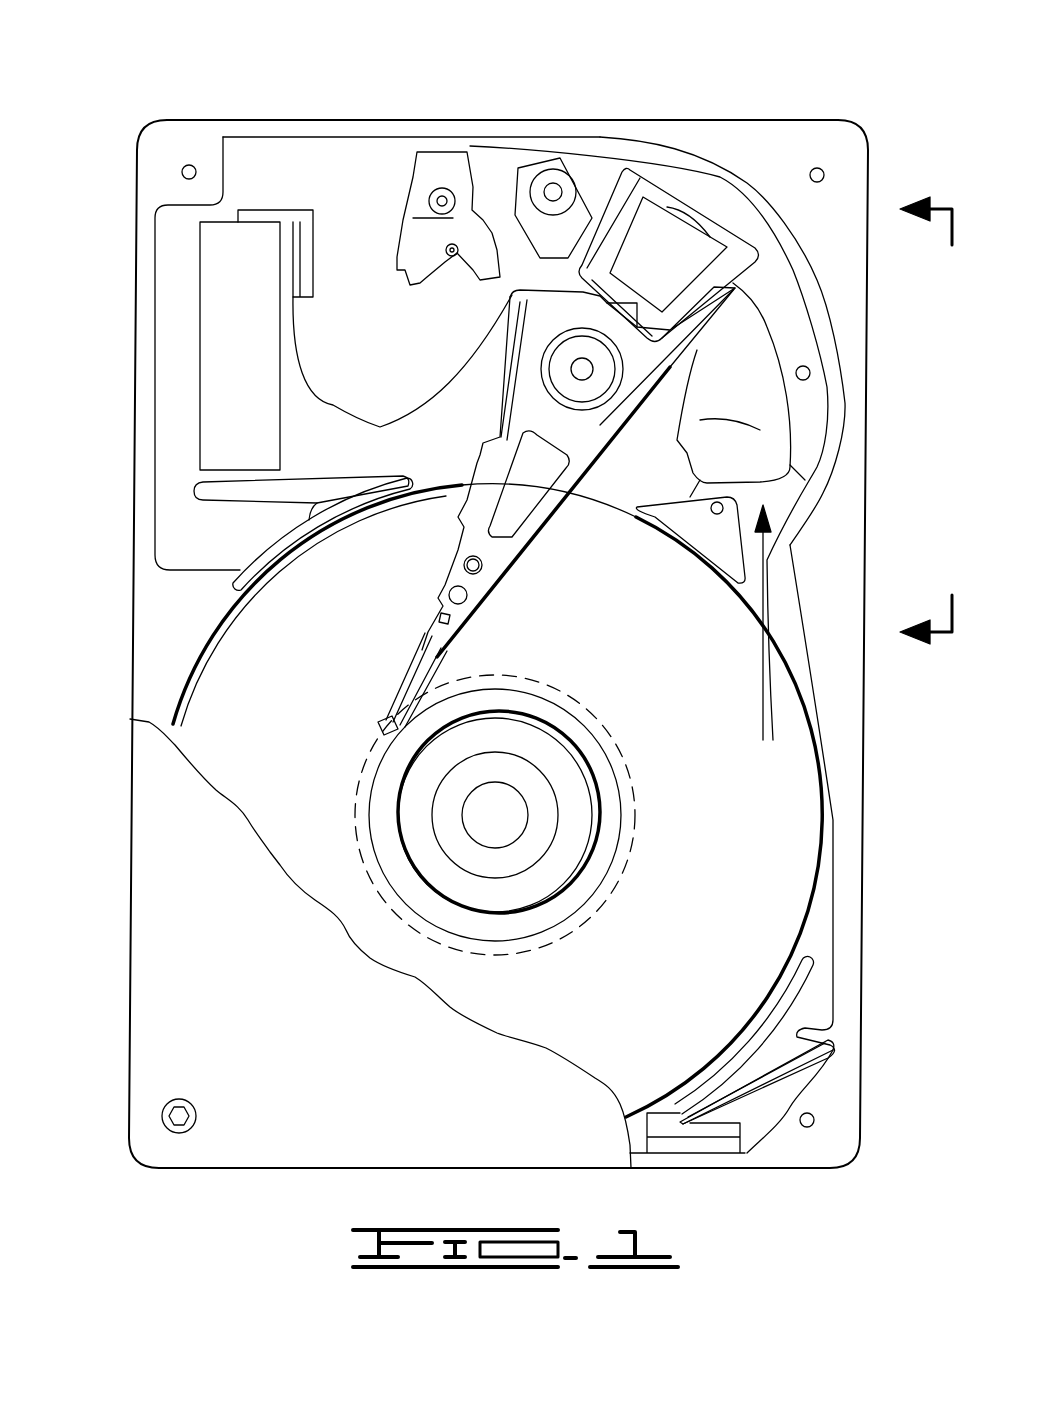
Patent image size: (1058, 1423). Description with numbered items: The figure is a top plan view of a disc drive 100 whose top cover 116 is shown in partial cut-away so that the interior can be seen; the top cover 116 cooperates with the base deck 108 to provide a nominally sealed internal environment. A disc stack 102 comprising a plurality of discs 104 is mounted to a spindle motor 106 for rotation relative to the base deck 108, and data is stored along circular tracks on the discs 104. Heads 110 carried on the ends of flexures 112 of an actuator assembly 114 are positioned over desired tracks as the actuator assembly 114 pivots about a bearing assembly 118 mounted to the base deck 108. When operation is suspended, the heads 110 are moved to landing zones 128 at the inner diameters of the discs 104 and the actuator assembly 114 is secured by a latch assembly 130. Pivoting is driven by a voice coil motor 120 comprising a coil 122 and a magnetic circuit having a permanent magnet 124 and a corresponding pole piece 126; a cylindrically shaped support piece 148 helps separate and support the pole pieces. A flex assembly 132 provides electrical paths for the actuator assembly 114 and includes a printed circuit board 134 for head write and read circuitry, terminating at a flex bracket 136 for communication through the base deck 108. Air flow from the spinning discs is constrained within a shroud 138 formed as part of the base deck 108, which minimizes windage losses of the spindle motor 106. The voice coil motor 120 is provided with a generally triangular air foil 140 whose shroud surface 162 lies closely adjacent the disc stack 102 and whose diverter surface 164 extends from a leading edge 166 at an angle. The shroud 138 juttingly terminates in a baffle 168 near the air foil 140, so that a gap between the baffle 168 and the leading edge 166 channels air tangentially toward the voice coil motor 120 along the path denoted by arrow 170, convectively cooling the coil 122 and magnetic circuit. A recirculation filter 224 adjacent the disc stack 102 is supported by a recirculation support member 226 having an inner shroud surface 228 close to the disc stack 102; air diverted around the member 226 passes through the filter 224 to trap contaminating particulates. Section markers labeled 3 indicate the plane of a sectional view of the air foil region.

The disc drive 100 is at (250, 88).
The disc stack 102 is at (788, 780).
The discs 104 is at (750, 910).
The spindle motor 106 is at (515, 860).
The base deck 108 is at (190, 526).
The heads 110 is at (378, 722).
The flexures 112 is at (415, 632).
The actuator assembly 114 is at (522, 420).
The top cover 116 is at (198, 900).
The bearing assembly 118 is at (576, 403).
The voice coil motor 120 is at (742, 183).
The coil 122 is at (652, 172).
The permanent magnet 124 is at (775, 402).
The pole piece 126 is at (780, 498).
The landing zones 128 is at (360, 775).
The latch assembly 130 is at (422, 173).
The flex assembly 132 is at (333, 405).
The printed circuit board 134 is at (503, 395).
The flex bracket 136 is at (215, 332).
The shroud 138 is at (195, 655).
The air foil 140 is at (682, 513).
The support piece 148 is at (550, 182).
The shroud surface 162 is at (687, 543).
The diverter surface 164 is at (762, 480).
The leading edge 166 is at (770, 608).
The baffle 168 is at (795, 545).
The arrow 170 is at (760, 700).
The recirculation filter 224 is at (757, 1090).
The recirculation support member 226 is at (667, 1105).
The inner shroud surface 228 is at (768, 1007).
The section line 3- 3 is at (914, 421).